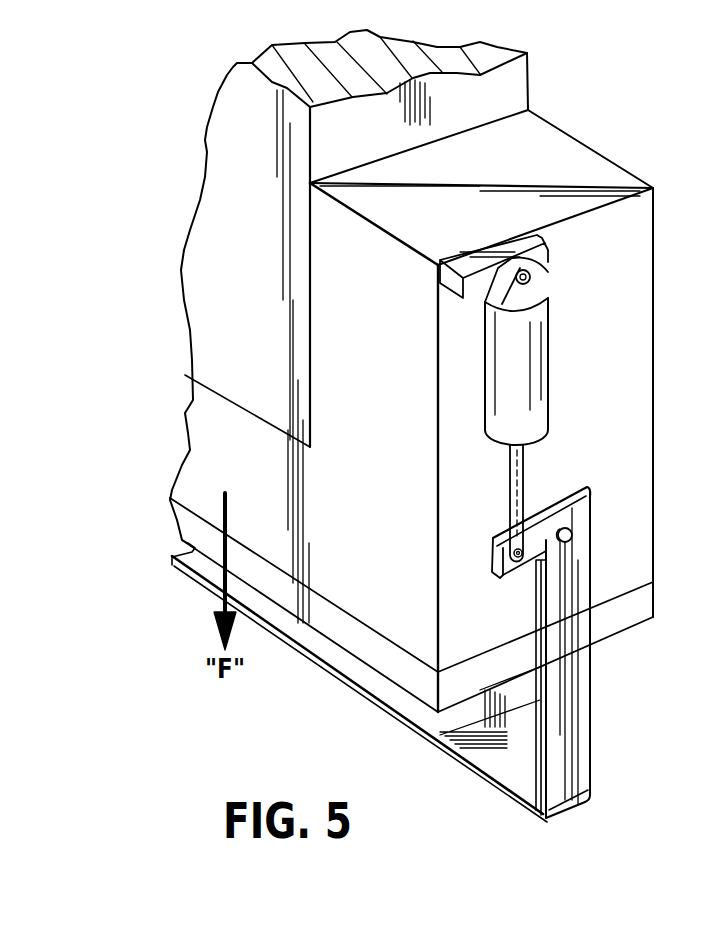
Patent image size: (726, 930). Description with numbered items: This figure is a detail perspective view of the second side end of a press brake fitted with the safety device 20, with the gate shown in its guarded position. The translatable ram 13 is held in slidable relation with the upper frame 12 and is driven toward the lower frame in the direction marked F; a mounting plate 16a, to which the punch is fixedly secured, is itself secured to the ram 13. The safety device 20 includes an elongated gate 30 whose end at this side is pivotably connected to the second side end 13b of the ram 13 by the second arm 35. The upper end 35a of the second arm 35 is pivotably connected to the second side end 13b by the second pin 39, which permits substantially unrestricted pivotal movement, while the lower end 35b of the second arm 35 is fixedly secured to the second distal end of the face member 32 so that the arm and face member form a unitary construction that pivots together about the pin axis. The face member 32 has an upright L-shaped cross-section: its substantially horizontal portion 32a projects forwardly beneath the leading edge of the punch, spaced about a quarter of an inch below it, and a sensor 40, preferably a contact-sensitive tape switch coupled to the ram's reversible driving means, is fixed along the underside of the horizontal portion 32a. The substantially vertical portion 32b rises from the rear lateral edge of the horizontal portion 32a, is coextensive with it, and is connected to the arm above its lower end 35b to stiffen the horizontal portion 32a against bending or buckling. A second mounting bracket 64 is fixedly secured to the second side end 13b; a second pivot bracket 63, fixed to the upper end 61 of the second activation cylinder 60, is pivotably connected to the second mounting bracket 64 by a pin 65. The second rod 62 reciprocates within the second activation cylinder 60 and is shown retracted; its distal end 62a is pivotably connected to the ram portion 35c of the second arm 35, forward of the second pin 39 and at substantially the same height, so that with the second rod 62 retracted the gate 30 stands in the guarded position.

The upper frame 12 is at (218, 137).
The translatable ram 13 is at (447, 408).
The second side end of the ram 13b is at (637, 237).
The mounting plate 16a is at (623, 617).
The safety device 20 is at (432, 657).
The elongated gate 30 is at (563, 657).
The face member 32 is at (359, 682).
The horizontal portion of the face member 32a is at (457, 727).
The vertical portion of the face member 32b is at (520, 730).
The second arm 35 is at (570, 757).
The upper end of the second arm 35a is at (590, 488).
The lower end of the second arm 35b is at (543, 818).
The ram portion of the second arm 35c is at (492, 540).
The second pin 39 is at (573, 537).
The sensor 40 is at (578, 810).
The second activation cylinder 60 is at (523, 410).
The upper end of the second activation cylinder 61 is at (548, 293).
The second rod 62 is at (538, 529).
The distal end of the second rod 62a is at (520, 560).
The second pivot bracket 63 is at (502, 305).
The second mounting bracket 64 is at (490, 250).
The pin 65 is at (540, 263).